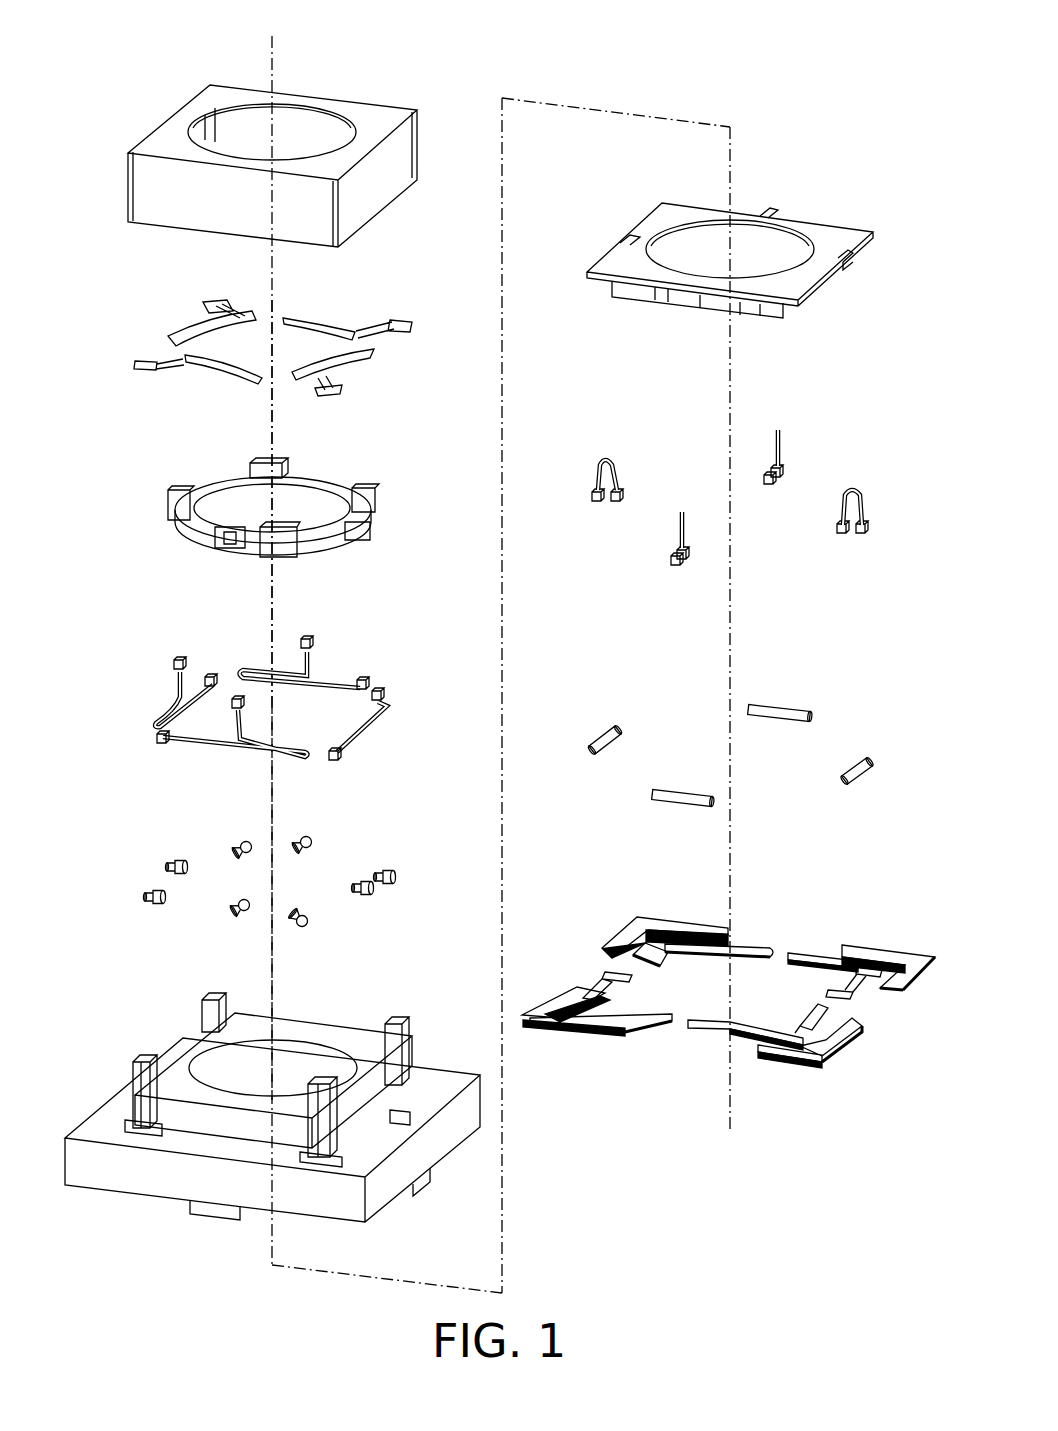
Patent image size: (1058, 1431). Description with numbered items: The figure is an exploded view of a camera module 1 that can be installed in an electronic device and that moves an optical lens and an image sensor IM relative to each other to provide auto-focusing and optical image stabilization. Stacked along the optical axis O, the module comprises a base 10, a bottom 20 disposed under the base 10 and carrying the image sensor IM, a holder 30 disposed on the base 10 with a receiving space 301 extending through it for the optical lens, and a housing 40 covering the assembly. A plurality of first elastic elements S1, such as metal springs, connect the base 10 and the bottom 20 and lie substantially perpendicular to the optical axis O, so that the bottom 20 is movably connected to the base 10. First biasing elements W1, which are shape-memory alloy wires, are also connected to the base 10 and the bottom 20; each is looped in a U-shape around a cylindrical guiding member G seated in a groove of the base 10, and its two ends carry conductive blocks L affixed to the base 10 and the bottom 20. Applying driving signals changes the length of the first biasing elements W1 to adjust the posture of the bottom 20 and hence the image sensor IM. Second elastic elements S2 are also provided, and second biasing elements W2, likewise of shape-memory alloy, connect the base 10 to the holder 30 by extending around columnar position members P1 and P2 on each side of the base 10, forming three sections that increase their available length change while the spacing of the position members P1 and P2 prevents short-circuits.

The camera module 1 is at (78, 31).
The optical axis O is at (272, 632).
The base 10 is at (135, 1032).
The bottom 20 is at (857, 213).
The holder 30 is at (376, 494).
The receiving space 301 is at (336, 502).
The housing 40 is at (375, 185).
The image sensor IM is at (762, 262).
The first elastic element S1 is at (622, 942).
The second elastic element S2 is at (200, 326).
The first biasing element W1 is at (682, 512).
The second biasing element W2 is at (158, 706).
The conductive block L is at (180, 655).
The guiding member G is at (602, 740).
The position member P1 is at (170, 866).
The position member P2 is at (237, 843).